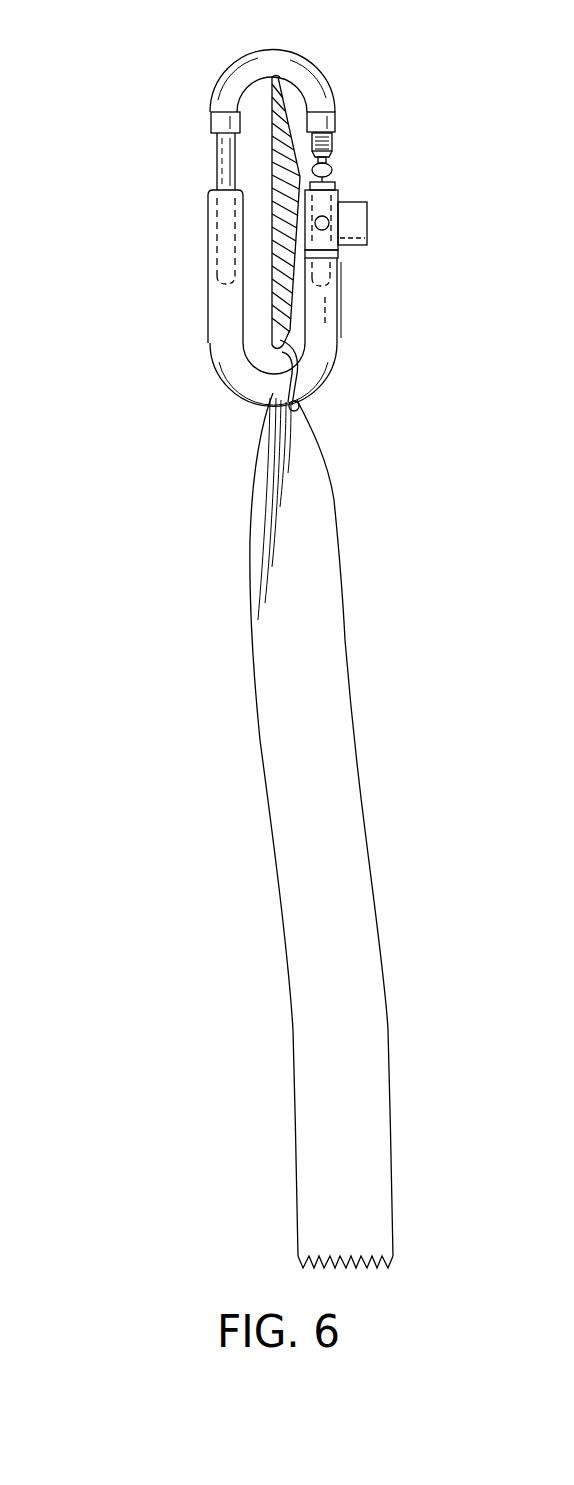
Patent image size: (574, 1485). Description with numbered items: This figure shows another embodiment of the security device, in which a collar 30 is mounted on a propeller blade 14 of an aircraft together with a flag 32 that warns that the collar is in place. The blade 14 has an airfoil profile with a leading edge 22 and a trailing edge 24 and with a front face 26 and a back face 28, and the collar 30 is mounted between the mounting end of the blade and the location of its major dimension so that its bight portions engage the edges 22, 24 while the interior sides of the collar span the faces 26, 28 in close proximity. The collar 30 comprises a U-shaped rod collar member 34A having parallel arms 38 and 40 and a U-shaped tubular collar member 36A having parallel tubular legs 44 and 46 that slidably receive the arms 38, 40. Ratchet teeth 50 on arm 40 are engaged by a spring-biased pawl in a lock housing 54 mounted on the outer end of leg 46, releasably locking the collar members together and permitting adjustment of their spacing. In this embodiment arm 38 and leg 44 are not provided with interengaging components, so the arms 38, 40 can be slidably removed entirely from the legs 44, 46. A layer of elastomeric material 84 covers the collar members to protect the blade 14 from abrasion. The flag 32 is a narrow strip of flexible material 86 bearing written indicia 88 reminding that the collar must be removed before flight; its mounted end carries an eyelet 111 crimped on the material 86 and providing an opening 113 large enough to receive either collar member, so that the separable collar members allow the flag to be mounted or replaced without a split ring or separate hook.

The propeller blade 14 is at (264, 287).
The leading edge 22 is at (272, 77).
The trailing edge 24 is at (270, 373).
The front face 26 is at (279, 220).
The back face 28 is at (268, 112).
The collar 30 is at (272, 212).
The flag 32 is at (356, 804).
The collar member 34A is at (342, 69).
The collar member 36A is at (355, 330).
The arm 38 is at (225, 152).
The arm 40 is at (332, 143).
The tubular leg 44 is at (220, 293).
The tubular leg 46 is at (330, 253).
The ratchet teeth 50 is at (344, 169).
The lock housing 54 is at (384, 203).
The layer of elastomeric material 84 is at (222, 80).
The flexible material 86 is at (330, 543).
The written indicia 88 is at (342, 770).
The eyelet 111 is at (299, 408).
The opening 113 is at (300, 390).